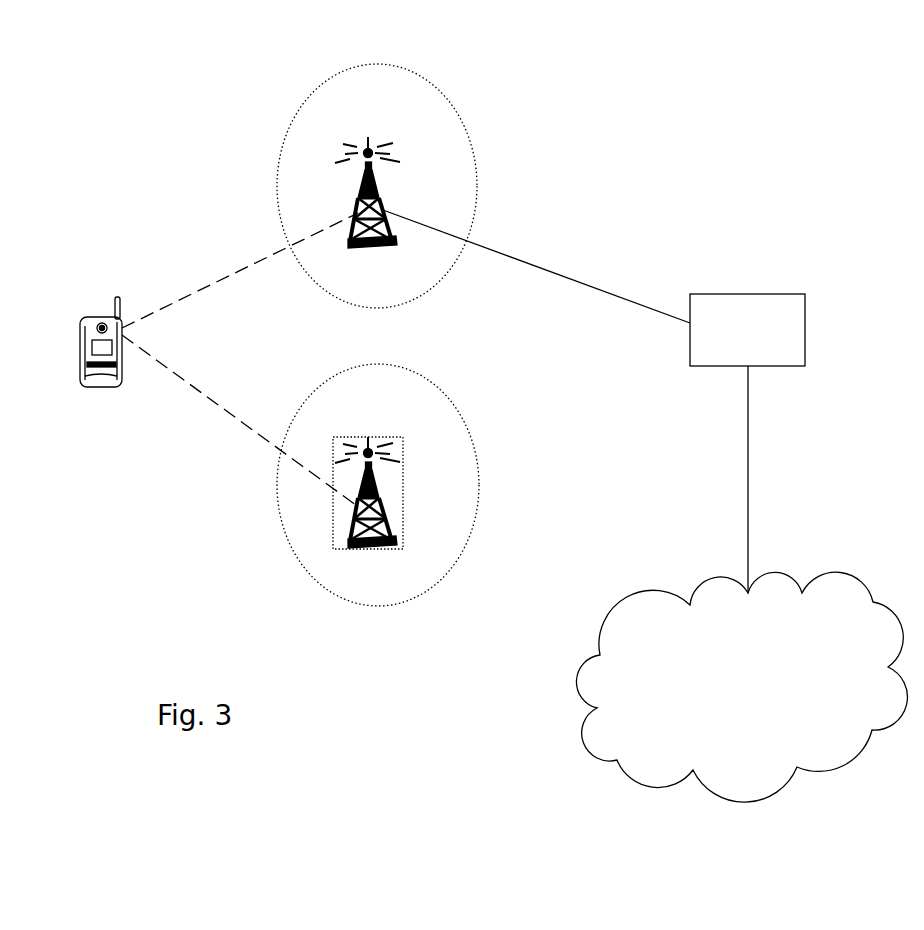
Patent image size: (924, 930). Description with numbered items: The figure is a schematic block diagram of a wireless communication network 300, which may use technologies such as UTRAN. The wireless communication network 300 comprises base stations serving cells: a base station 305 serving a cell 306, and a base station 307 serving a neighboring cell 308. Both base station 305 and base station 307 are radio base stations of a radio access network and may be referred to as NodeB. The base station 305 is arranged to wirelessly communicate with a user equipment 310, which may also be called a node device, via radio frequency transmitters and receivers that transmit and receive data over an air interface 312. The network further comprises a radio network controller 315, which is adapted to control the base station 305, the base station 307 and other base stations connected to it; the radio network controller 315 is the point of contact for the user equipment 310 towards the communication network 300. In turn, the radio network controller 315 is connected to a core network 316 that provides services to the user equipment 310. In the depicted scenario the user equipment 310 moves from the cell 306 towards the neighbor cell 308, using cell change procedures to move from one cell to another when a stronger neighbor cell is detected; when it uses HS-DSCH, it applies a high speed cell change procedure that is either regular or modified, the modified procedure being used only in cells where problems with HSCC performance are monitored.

The wireless communication network 300 is at (692, 160).
The base station 305 is at (377, 180).
The cell 306 is at (433, 93).
The base station 307 is at (370, 547).
The cell 308 is at (305, 567).
The user equipment 310 is at (105, 322).
The air interface 312 is at (192, 380).
The radio network controller 315 is at (747, 307).
The core network 316 is at (592, 665).